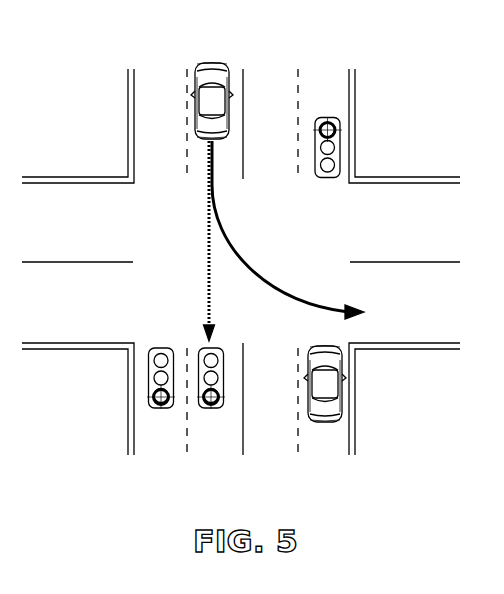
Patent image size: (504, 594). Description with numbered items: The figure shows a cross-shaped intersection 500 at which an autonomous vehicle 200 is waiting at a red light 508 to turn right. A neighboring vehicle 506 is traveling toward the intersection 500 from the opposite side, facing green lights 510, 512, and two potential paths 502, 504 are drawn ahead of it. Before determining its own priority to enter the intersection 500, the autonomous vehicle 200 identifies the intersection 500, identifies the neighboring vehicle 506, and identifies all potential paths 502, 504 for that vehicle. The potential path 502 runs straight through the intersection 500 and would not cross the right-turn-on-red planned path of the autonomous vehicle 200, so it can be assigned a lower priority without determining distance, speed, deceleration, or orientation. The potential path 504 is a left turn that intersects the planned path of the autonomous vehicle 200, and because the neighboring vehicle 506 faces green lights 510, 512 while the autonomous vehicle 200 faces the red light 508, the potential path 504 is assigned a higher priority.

The cross-shaped intersection 500 is at (394, 149).
The potential path 502 is at (209, 256).
The potential path 504 is at (286, 287).
The neighboring vehicle 506 is at (229, 76).
The red light 508 is at (328, 117).
The green light 510 is at (211, 409).
The green light 512 is at (161, 409).
The autonomous vehicle 200 is at (343, 398).